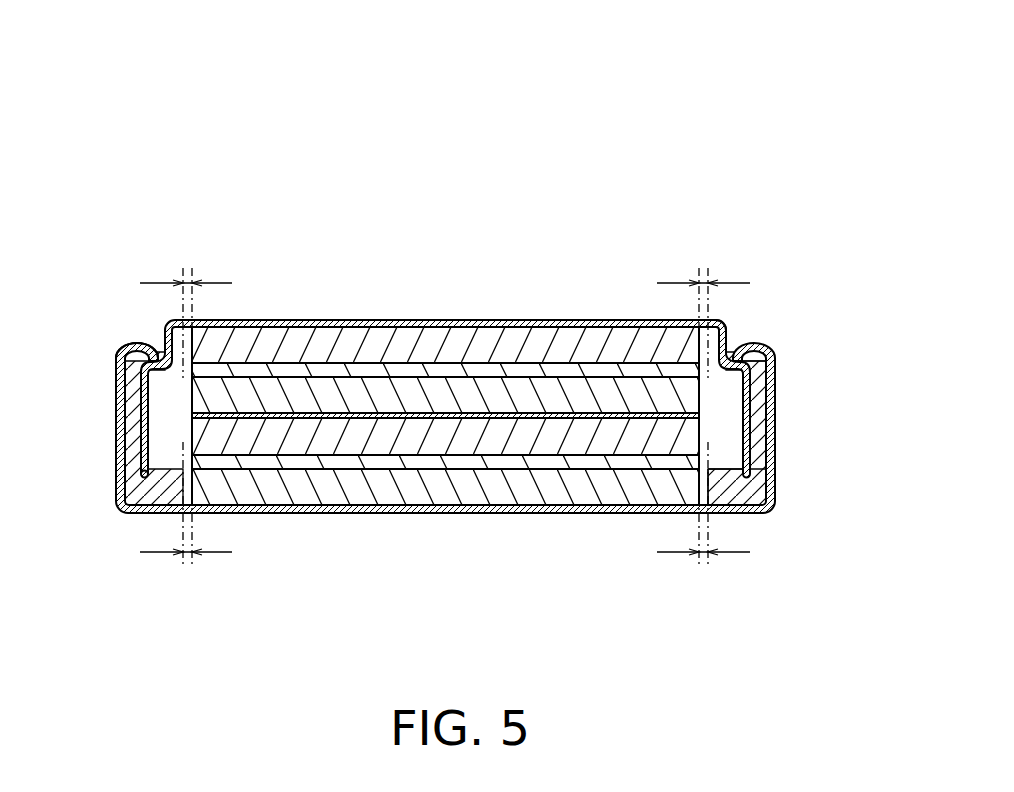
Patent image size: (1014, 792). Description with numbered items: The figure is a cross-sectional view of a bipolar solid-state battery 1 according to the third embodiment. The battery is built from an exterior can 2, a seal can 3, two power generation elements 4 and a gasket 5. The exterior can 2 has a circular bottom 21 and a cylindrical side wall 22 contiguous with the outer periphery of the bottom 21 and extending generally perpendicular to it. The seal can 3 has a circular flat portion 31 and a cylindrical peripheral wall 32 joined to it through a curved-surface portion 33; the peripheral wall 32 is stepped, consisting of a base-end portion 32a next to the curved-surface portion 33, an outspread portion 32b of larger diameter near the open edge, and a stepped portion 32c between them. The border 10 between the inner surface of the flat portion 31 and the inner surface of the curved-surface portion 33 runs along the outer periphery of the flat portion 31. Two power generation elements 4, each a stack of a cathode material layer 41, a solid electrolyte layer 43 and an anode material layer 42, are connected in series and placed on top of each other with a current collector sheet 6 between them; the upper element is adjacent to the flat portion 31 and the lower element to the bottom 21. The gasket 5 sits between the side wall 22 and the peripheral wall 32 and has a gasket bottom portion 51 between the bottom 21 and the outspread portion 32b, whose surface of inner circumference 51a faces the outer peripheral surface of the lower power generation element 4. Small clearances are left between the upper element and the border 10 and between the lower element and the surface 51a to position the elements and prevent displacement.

The solid-state battery 1 is at (135, 212).
The exterior can 2 is at (618, 513).
The seal can 3 is at (552, 318).
The power generation element 4 is at (445, 416).
The gasket 5 is at (138, 364).
The current collector sheet 6 is at (138, 418).
The border 10 is at (446, 413).
The bottom 21 is at (567, 513).
The cylindrical side wall 22 is at (125, 476).
The flat portion 31 is at (533, 318).
The peripheral wall 32 is at (138, 426).
The base-end portion 32a is at (745, 352).
The outspread portion 32b is at (748, 423).
The stepped portion 32c is at (752, 383).
The curved-surface portion 33 is at (718, 325).
The cathode material layer 41 is at (303, 395).
The anode material layer 42 is at (387, 345).
The solid electrolyte layer 43 is at (350, 370).
The gasket bottom portion 51 is at (733, 487).
The surface of inner circumference 51a is at (733, 509).